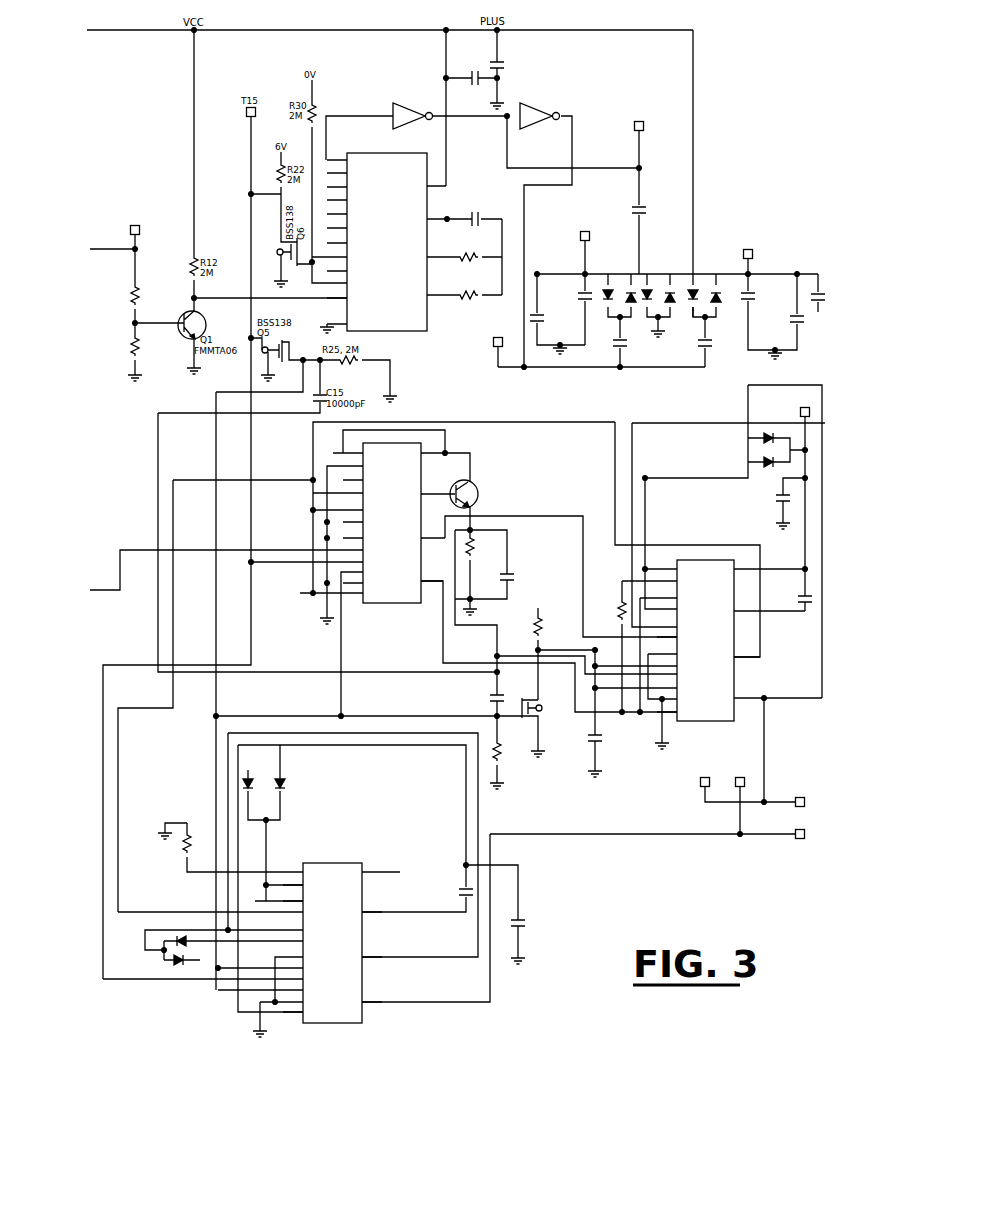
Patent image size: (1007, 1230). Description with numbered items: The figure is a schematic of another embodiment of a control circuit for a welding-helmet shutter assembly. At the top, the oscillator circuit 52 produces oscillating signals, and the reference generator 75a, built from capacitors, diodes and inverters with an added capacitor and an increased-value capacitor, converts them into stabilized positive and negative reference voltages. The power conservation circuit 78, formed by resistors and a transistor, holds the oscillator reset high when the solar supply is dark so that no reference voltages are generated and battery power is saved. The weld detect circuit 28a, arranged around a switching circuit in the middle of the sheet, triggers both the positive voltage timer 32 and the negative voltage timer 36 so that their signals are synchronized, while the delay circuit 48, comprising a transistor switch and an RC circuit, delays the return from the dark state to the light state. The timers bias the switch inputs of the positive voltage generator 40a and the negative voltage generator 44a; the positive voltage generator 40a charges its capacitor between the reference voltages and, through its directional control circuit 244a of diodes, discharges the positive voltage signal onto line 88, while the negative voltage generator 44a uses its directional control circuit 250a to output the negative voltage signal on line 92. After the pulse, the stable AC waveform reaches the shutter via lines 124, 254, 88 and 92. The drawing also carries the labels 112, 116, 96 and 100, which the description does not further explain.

The oscillator circuit 52 is at (345, 82).
The reference generator 75a is at (752, 174).
The power conservation circuit 78 is at (123, 312).
The weld detect circuit 28a is at (431, 411).
The line 124 is at (282, 445).
The transistor Q8 112 is at (453, 483).
The delay circuit 48 is at (521, 478).
The RC network R28 C21 116 is at (492, 624).
The line 254 is at (440, 625).
The bias resistor R29 node 96 is at (553, 650).
The directional control circuit 244a is at (710, 500).
The positive voltage generator 40a is at (828, 497).
The line 88 is at (766, 750).
The multiplexer enclosure line 100 is at (217, 778).
The directional control circuit 250a is at (338, 785).
The negative voltage timer 36 is at (520, 775).
The positive voltage timer 32 is at (611, 775).
The line 92 is at (577, 836).
The negative voltage generator 44a is at (172, 1006).